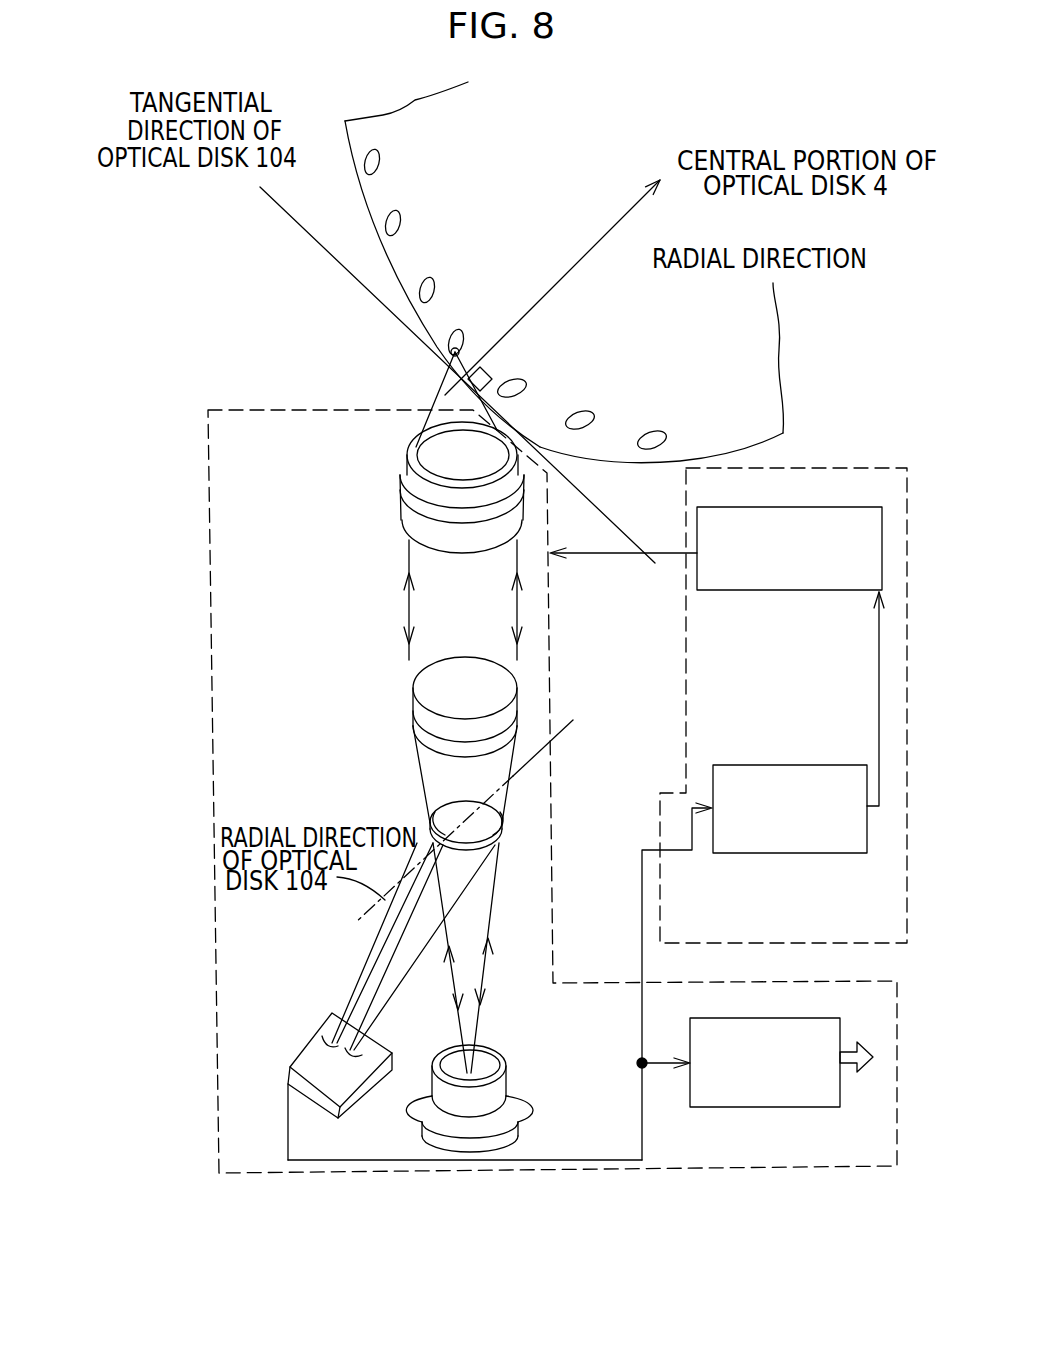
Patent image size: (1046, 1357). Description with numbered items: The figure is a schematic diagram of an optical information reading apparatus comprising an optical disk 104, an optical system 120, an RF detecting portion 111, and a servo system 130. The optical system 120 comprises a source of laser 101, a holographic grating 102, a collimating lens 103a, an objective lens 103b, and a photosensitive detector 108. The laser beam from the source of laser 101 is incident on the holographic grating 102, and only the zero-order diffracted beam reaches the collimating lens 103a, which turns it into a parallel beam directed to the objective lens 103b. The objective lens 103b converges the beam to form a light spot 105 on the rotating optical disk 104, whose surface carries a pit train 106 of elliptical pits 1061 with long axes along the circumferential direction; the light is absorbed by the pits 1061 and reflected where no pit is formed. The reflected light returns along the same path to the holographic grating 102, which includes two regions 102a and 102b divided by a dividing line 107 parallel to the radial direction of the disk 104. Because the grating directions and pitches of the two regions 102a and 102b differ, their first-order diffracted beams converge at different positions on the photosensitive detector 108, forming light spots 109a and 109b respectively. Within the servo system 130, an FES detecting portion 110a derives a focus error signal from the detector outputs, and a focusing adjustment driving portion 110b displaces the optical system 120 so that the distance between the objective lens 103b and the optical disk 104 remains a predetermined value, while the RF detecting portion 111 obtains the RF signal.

The source of laser 101 is at (443, 1093).
The holographic grating 102 is at (445, 805).
The region of holographic grating 102a is at (443, 822).
The region of holographic grating 102b is at (493, 822).
The collimating lens 103a is at (429, 720).
The objective lens 103b is at (420, 490).
The optical disk 104 is at (728, 350).
The light spot 105 is at (447, 351).
The pit train 106 is at (398, 247).
The elliptical pit 1061 is at (435, 288).
The dividing line 107 is at (480, 774).
The photosensitive detector 108 is at (308, 1060).
The light spot 109a is at (328, 1040).
The light spot 109b is at (358, 1050).
The FES detecting portion 110a is at (785, 765).
The focusing adjustment driving portion 110b is at (797, 591).
The RF detecting portion 111 is at (798, 1108).
The optical system 120 is at (255, 438).
The servo system 130 is at (860, 480).